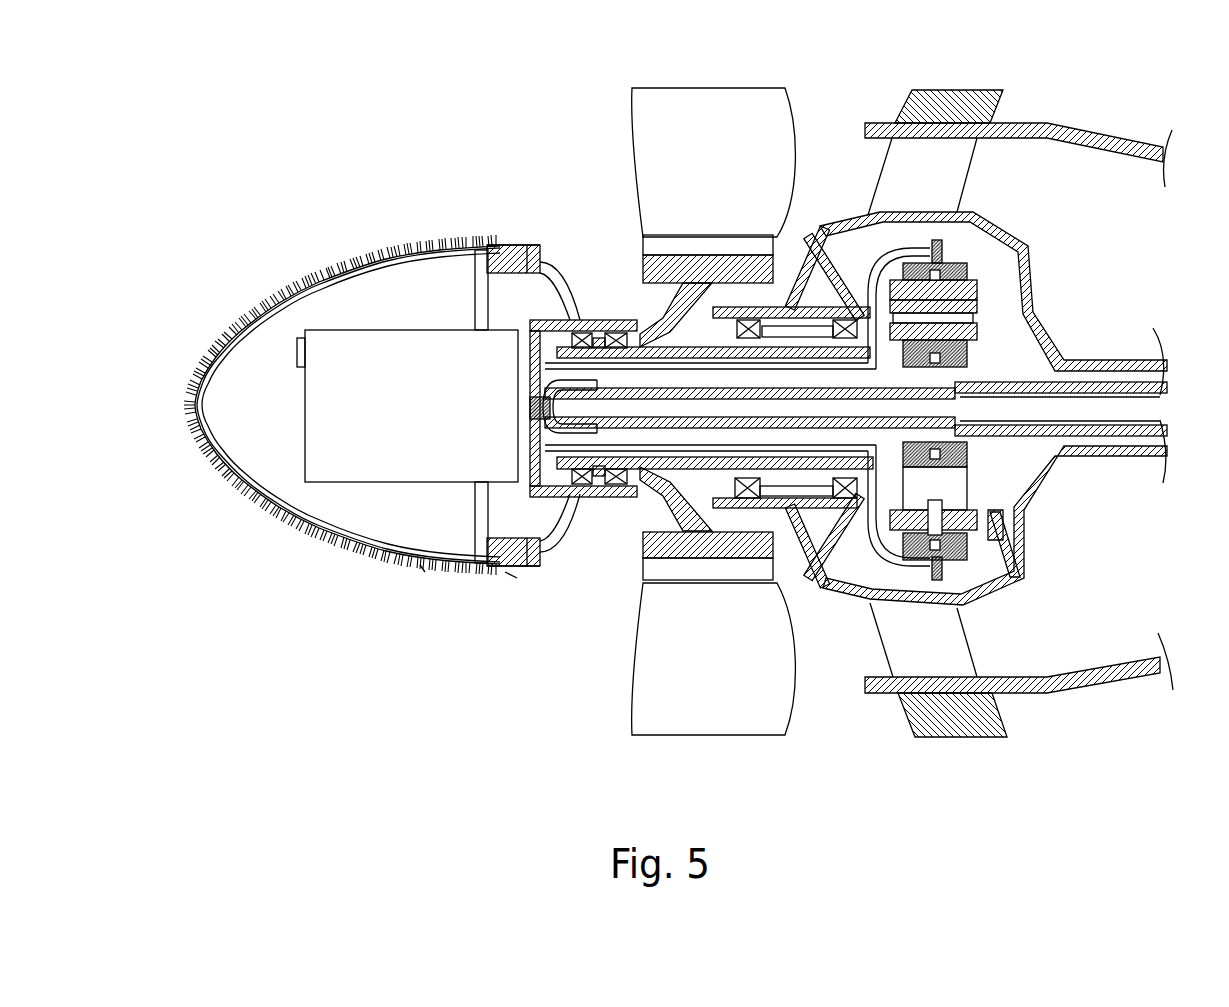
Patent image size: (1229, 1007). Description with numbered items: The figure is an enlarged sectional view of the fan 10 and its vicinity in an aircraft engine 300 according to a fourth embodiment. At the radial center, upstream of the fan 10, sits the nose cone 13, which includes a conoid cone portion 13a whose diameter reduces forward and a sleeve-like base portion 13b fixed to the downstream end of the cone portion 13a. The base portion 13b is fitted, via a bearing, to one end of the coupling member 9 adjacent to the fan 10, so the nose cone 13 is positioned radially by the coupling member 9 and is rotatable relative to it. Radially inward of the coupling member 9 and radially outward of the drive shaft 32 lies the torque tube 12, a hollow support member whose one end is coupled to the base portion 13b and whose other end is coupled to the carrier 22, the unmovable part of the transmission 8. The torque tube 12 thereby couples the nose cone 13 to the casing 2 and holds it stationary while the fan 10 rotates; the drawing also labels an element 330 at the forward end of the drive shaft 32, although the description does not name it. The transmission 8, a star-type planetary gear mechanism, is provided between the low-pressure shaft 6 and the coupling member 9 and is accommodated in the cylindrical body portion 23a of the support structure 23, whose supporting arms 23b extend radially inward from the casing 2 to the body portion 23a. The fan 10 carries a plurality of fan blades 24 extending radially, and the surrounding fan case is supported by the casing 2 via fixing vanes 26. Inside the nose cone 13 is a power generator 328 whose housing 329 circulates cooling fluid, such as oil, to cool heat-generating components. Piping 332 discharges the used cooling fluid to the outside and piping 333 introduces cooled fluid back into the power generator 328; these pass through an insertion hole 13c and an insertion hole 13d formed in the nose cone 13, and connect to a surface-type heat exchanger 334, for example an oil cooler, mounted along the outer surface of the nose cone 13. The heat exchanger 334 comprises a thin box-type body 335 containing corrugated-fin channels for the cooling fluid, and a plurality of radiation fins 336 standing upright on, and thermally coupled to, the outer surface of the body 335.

The casing 2 is at (1048, 120).
The low-pressure shaft 6 is at (1045, 383).
The transmission 8 is at (978, 231).
The coupling member 9 is at (813, 478).
The fan 10 is at (728, 387).
The torque tube 12 is at (547, 498).
The nose cone 13 is at (517, 231).
The cone portion 13a is at (525, 242).
The base portion 13b is at (565, 254).
The insertion hole 13c is at (503, 548).
The insertion hole 13d is at (502, 266).
The carrier 22 is at (977, 490).
The support structure 23 is at (1036, 593).
The body portion 23a is at (987, 607).
The supporting arms 23b is at (970, 643).
The fan blades 24 is at (790, 128).
The fixing vanes 26 is at (1000, 715).
The drive shaft 32 is at (778, 385).
The aircraft engine 300 is at (221, 222).
The power generator 328 is at (351, 496).
The housing 329 is at (305, 388).
The shaft end cap 330 is at (568, 434).
The piping 332 is at (420, 570).
The piping 333 is at (475, 300).
The heat exchanger 334 is at (240, 313).
The body 335 is at (517, 578).
The radiation fins 336 is at (310, 278).